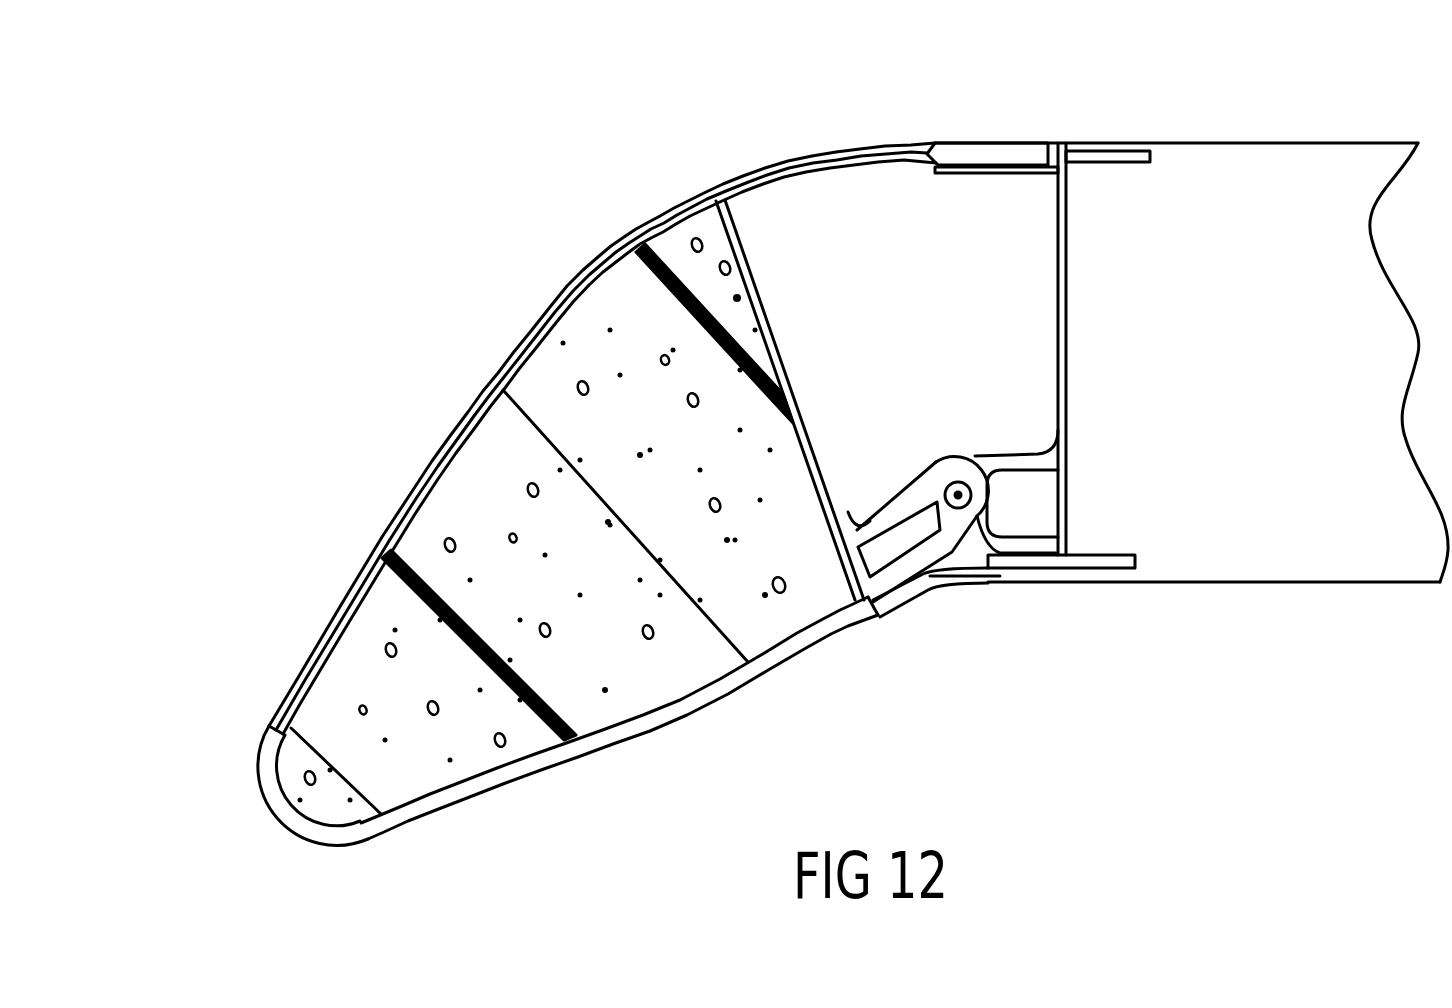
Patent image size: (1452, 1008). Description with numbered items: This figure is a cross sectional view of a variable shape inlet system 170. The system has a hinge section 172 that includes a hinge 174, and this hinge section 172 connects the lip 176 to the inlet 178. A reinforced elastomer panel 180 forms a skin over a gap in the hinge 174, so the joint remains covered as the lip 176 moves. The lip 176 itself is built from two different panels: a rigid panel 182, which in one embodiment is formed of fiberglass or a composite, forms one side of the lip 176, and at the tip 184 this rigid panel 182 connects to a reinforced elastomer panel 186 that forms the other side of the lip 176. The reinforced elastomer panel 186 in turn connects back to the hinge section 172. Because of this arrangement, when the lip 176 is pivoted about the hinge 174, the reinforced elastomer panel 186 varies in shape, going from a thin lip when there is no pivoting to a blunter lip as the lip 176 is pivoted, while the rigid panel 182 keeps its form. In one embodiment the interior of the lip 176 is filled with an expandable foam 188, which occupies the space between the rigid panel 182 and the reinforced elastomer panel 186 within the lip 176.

The variable shape inlet system 170 is at (943, 91).
The hinge section 172 is at (1148, 363).
The hinge 174 is at (946, 462).
The lip 176 is at (360, 406).
The inlet 178 is at (1322, 173).
The reinforced elastomer panel 180 is at (912, 598).
The rigid panel 182 is at (688, 692).
The tip 184 is at (258, 790).
The reinforced elastomer panel 186 is at (513, 353).
The expandable foam 188 is at (597, 695).